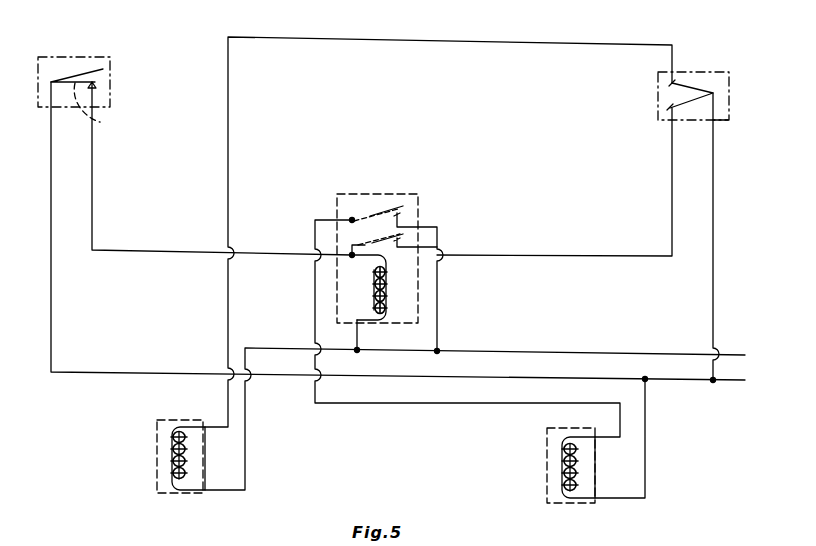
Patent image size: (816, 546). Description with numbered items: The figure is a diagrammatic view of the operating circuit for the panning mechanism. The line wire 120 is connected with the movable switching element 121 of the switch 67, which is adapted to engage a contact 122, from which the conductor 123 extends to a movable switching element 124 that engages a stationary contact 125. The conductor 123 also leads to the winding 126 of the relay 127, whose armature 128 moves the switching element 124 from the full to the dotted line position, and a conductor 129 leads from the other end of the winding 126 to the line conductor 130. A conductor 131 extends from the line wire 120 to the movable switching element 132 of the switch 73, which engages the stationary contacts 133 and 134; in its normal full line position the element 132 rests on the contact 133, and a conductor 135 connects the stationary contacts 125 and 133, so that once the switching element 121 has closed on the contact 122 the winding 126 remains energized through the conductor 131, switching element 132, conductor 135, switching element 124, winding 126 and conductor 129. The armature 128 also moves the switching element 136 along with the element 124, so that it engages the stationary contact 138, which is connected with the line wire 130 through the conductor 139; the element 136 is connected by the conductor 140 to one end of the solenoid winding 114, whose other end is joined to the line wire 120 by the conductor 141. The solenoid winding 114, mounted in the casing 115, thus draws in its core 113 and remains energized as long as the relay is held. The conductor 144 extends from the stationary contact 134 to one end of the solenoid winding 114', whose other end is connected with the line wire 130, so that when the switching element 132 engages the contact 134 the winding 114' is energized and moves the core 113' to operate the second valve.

The switch 67 is at (107, 75).
The switch 73 is at (728, 122).
The core 113 is at (604, 465).
The core 113' is at (210, 455).
The solenoid winding 114 is at (545, 467).
The solenoid winding 114' is at (156, 458).
The casing 115 is at (162, 488).
The line wire 120 is at (685, 383).
The movable switching element 121 is at (88, 70).
The contact 122 is at (95, 85).
The conductor 123 is at (110, 250).
The movable switching element 124 is at (380, 240).
The stationary contact 125 is at (408, 243).
The winding 126 is at (386, 278).
The relay 127 is at (410, 317).
The armature 128 is at (372, 296).
The conductor 129 is at (357, 337).
The line conductor 130 is at (550, 350).
The conductor 131 is at (712, 223).
The movable switching element 132 is at (693, 87).
The stationary contact 133 is at (672, 108).
The stationary contact 134 is at (672, 83).
The conductor 135 is at (625, 253).
The switching element 136 is at (382, 210).
The stationary contact 138 is at (400, 217).
The conductor 139 is at (438, 302).
The conductor 140 is at (313, 283).
The conductor 141 is at (645, 447).
The conductor 144 is at (400, 42).